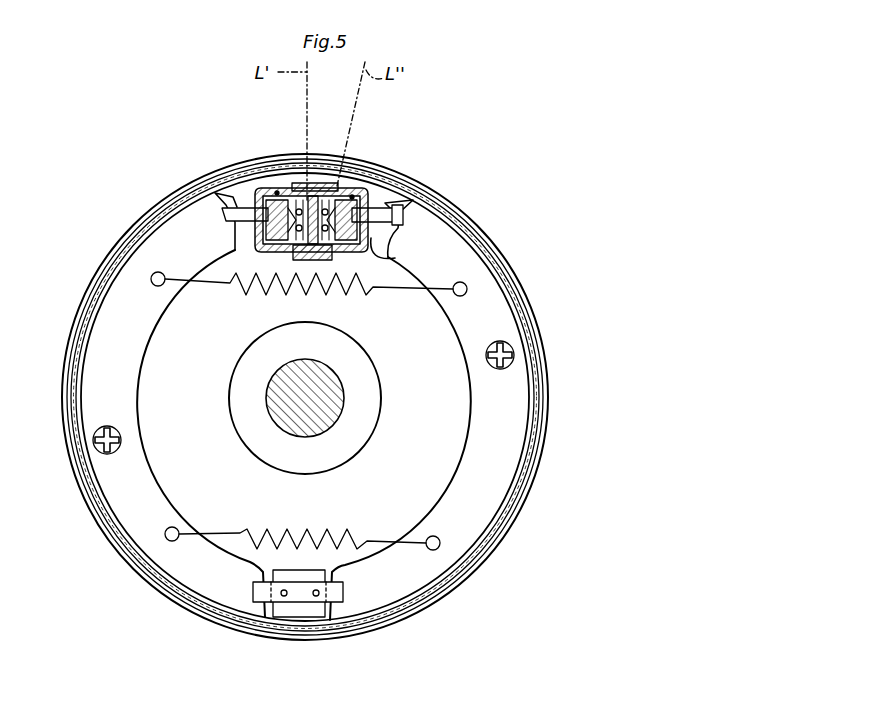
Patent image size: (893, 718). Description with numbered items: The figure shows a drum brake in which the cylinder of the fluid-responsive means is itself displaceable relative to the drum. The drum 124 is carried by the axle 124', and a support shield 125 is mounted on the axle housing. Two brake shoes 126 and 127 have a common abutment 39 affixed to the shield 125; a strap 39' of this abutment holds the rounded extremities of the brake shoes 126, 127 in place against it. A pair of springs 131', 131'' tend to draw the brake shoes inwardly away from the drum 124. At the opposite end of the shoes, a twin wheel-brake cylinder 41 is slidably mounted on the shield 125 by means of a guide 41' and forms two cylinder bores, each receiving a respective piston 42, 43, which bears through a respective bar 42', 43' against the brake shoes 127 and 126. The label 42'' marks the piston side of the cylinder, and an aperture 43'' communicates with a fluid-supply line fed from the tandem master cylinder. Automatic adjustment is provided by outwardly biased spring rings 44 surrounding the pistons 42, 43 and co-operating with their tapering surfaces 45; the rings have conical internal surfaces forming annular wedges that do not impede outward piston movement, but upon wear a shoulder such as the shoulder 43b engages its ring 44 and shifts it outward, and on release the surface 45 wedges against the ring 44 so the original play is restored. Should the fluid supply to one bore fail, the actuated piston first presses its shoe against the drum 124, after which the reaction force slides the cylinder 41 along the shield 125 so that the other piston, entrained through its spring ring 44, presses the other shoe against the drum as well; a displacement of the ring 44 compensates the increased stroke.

The common abutment 39 is at (299, 634).
The strap 39' is at (325, 627).
The twin wheel-brake cylinder 41 is at (347, 180).
The guide 41' is at (312, 296).
The piston 42 is at (317, 178).
The bar 42' is at (203, 185).
The left piston 42'' is at (268, 259).
The piston 43 is at (353, 195).
The bar 43' is at (440, 211).
The aperture 43'' is at (348, 259).
The shoulder 43b is at (353, 195).
The spring ring 44 is at (376, 249).
The tapering surface 45 is at (277, 191).
The drum 124 is at (279, 397).
The axle 124' is at (345, 406).
The shield 125 is at (170, 342).
The brake shoe 126 is at (492, 311).
The brake shoe 127 is at (125, 296).
The spring 131' is at (309, 295).
The spring 131'' is at (302, 521).